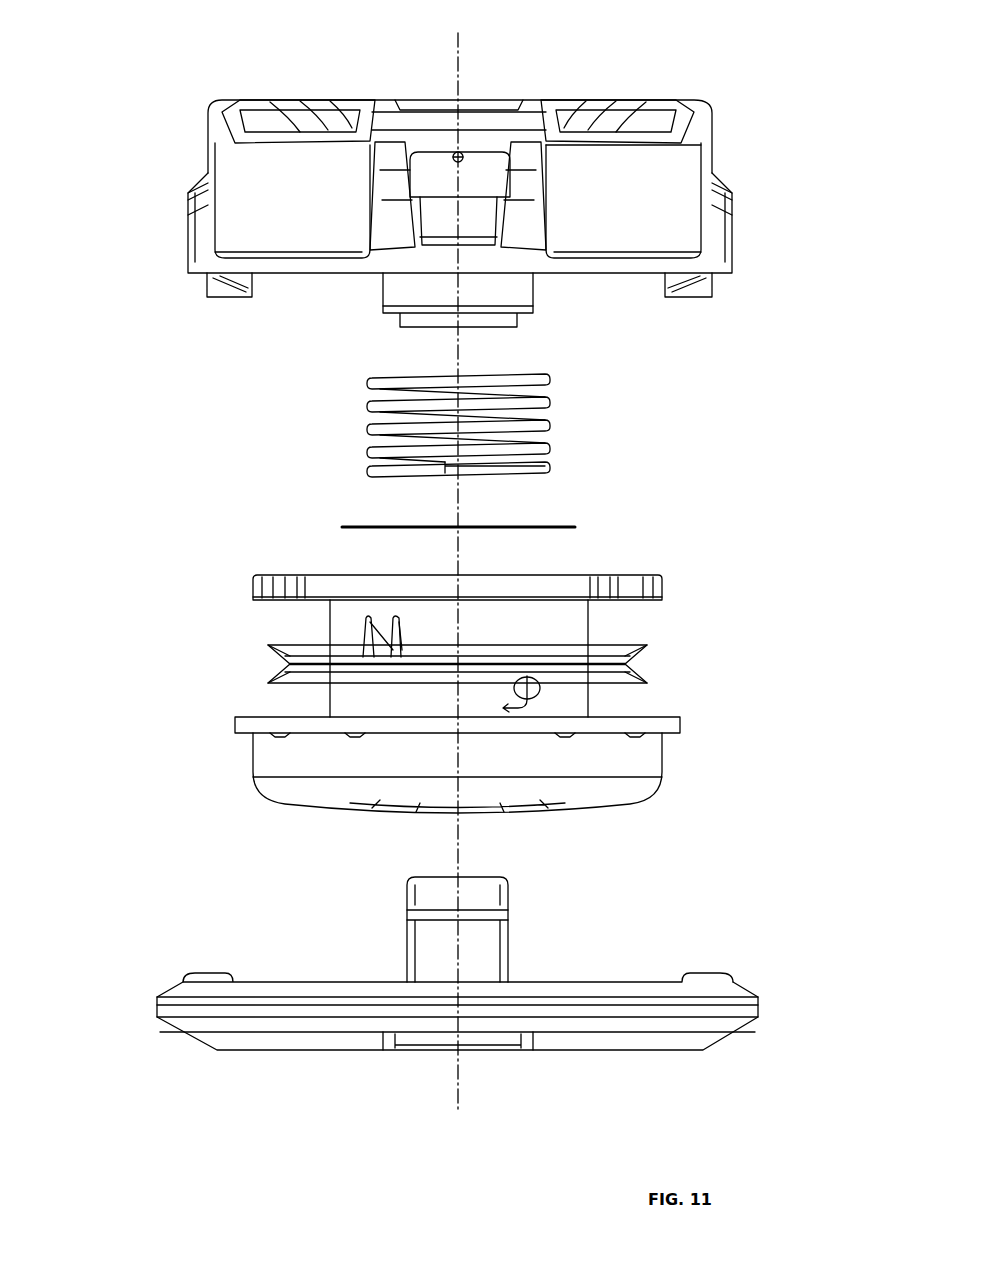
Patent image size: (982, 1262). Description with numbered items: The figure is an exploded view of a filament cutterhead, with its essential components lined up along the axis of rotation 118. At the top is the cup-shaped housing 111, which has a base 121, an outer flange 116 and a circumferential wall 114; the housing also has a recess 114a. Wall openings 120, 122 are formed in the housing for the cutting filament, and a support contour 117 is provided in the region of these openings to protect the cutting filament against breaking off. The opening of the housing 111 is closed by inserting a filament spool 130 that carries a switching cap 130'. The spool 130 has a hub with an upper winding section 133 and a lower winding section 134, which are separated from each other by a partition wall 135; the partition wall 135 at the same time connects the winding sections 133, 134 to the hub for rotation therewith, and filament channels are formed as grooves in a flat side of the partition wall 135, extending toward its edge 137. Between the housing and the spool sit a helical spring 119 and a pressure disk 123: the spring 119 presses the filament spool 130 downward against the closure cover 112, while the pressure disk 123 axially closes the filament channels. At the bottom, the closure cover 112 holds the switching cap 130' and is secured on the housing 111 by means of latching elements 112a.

The cup-shaped housing 111 is at (205, 153).
The closure cover 112 is at (611, 990).
The latching elements 112a is at (437, 892).
The circumferential wall 114 is at (640, 185).
The recess 114a is at (440, 185).
The outer flange 116 is at (610, 262).
The support contour 117 is at (207, 224).
The axis of rotation 118 is at (457, 45).
The helical spring 119 is at (550, 408).
The wall opening 120 is at (753, 232).
The base 121 is at (548, 97).
The wall opening 122 is at (155, 233).
The pressure disk 123 is at (357, 527).
The filament spool 130 is at (476, 597).
The switching cap 130' is at (526, 773).
The upper winding section 133 is at (603, 623).
The lower winding section 134 is at (603, 698).
The partition wall 135 is at (425, 655).
The edge 137 is at (390, 665).